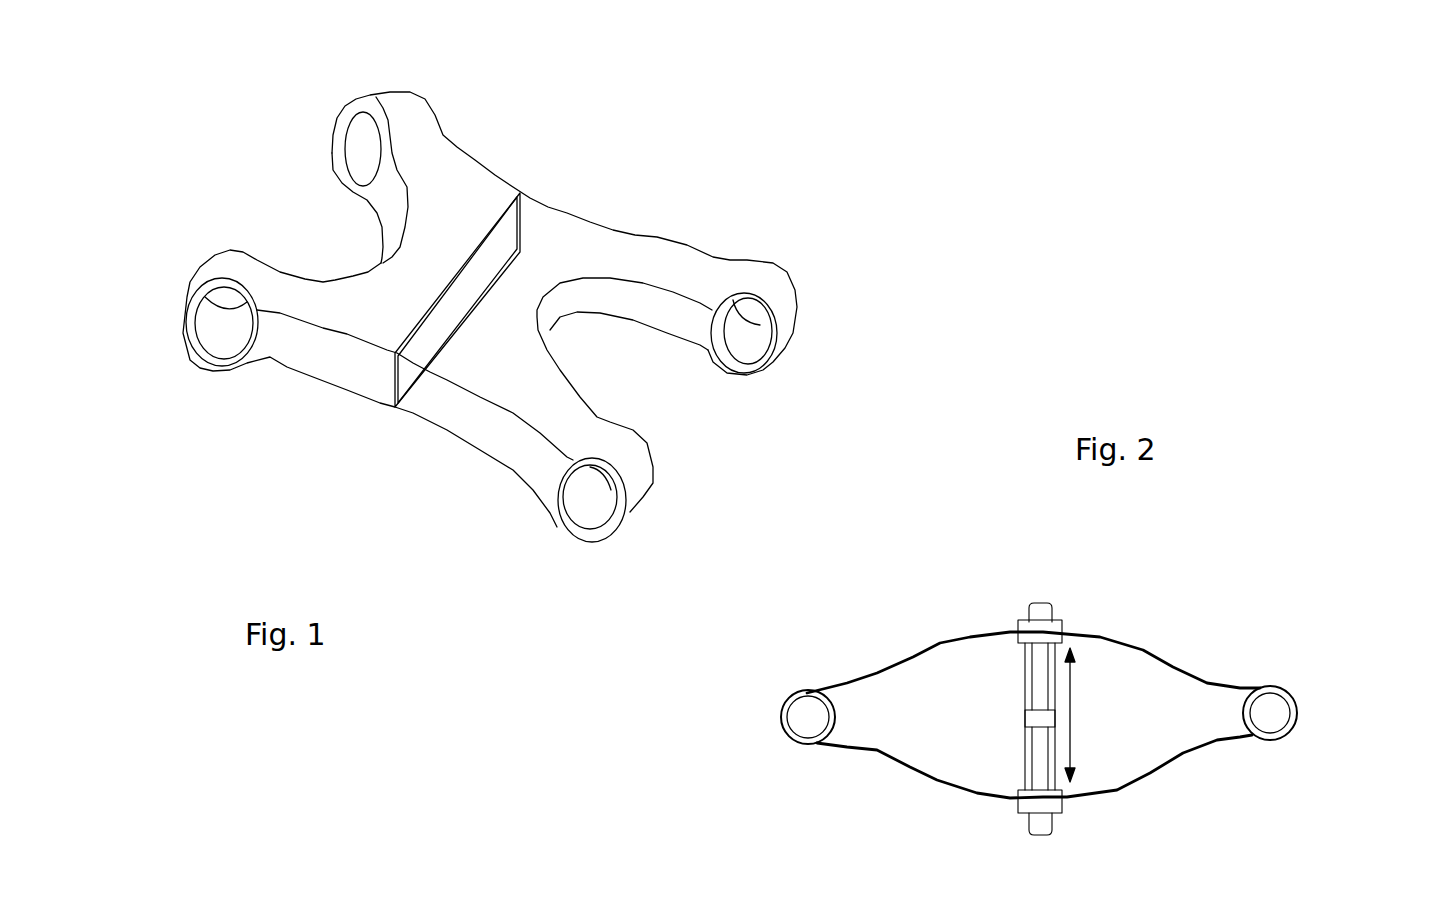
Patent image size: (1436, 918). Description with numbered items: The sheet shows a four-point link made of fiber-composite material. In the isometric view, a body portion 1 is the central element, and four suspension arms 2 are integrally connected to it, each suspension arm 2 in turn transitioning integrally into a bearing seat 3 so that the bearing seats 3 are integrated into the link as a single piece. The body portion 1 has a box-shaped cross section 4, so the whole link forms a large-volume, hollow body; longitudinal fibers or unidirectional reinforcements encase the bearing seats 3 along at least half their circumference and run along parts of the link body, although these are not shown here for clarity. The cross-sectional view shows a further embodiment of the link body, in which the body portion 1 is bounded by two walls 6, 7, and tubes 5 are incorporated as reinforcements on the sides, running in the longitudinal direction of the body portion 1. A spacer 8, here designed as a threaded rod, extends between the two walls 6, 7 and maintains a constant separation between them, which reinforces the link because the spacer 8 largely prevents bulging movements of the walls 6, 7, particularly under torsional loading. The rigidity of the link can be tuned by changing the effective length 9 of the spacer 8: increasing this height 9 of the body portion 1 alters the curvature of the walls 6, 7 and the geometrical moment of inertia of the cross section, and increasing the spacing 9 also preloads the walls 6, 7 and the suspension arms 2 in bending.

In FIG. 1, the body portion 1 is at (452, 228).
In FIG. 2, the body portion 1 is at (1040, 713).
In FIG. 1, the suspension arm 2 is at (445, 165).
In FIG. 1, the bearing seat 3 is at (370, 152).
In FIG. 1, the box-shaped cross section 4 is at (468, 260).
In FIG. 2, the tube 5 is at (808, 717).
In FIG. 2, the wall 6 is at (1143, 650).
In FIG. 2, the wall 7 is at (920, 770).
In FIG. 2, the spacer 8 is at (1038, 670).
In FIG. 2, the effective length 9 is at (1080, 715).